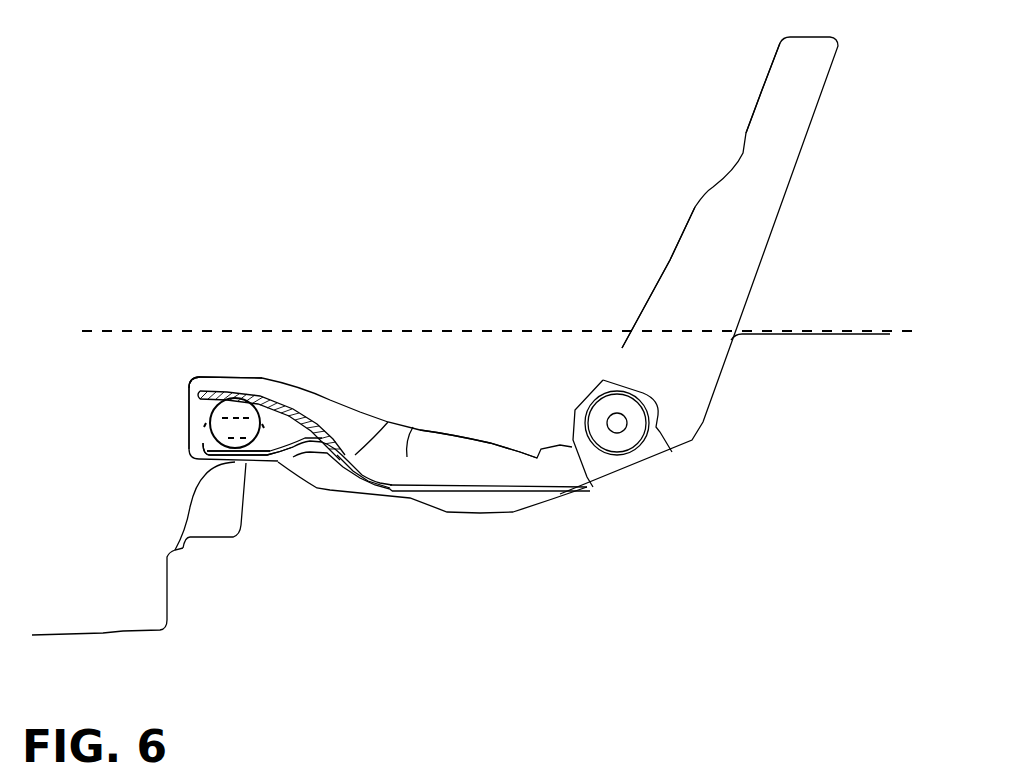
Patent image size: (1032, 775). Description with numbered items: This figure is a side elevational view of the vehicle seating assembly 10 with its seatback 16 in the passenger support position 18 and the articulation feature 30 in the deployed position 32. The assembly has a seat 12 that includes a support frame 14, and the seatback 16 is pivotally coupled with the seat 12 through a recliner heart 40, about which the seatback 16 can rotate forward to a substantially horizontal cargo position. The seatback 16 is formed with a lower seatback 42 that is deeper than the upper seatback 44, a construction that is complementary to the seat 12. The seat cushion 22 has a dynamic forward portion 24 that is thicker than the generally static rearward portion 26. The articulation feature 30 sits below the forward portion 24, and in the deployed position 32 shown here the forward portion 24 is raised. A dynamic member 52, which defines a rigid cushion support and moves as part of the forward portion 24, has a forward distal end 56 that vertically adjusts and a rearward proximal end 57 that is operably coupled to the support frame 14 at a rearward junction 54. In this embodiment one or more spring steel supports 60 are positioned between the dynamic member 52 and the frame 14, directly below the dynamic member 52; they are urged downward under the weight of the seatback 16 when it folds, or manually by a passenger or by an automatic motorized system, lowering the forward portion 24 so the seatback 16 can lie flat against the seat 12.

The vehicle seating assembly 10 is at (205, 152).
The seat 12 is at (355, 430).
The support frame 14 is at (375, 490).
The seatback 16 is at (758, 242).
The passenger support position 18 is at (616, 201).
The seat cushion 22 is at (420, 430).
The dynamic forward portion 24 is at (217, 383).
The rearward portion 26 is at (536, 472).
The articulation feature 30 is at (168, 455).
The deployed position 32 is at (177, 383).
The recliner heart 40 is at (618, 428).
The lower seatback 42 is at (665, 293).
The upper seatback 44 is at (768, 102).
The dynamic member 52 is at (277, 403).
The rearward junction 54 is at (327, 470).
The forward distal end 56 is at (198, 390).
The rearward proximal end 57 is at (413, 427).
The spring steel supports 60 is at (210, 420).